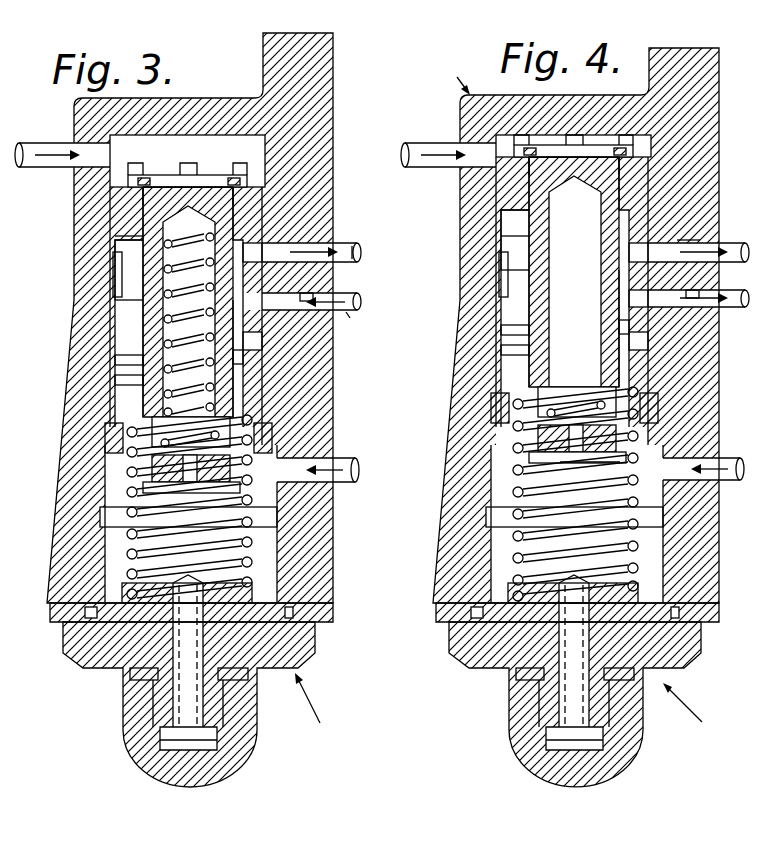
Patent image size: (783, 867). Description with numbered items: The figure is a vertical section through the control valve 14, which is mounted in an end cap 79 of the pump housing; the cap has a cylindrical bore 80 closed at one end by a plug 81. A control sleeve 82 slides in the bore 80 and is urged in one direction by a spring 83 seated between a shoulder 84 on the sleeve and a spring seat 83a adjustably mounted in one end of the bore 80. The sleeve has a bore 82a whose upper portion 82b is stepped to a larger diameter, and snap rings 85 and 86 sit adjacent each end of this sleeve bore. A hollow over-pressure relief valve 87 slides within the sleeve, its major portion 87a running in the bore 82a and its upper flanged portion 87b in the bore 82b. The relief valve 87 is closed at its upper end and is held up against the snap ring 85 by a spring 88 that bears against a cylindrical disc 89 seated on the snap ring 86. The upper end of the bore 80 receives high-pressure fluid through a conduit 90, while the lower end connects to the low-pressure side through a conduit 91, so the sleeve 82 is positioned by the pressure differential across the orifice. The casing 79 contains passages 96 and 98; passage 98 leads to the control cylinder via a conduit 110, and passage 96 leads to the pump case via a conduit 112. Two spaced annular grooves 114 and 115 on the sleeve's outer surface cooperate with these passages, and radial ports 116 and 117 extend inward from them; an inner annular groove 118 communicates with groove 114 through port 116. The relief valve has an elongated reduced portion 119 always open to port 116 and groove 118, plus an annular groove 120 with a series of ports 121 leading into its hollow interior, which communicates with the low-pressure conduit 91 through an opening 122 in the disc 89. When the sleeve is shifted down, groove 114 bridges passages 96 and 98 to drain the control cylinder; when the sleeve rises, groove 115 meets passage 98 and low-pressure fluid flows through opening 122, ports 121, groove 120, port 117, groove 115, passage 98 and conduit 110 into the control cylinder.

In FIG. 3, the control valve 14 is at (347, 743).
In FIG. 4, the control valve 14 is at (730, 746).
In FIG. 3, the end cap 79 is at (218, 104).
In FIG. 4, the end cap 79 is at (610, 102).
In FIG. 3, the cylindrical bore 80 is at (268, 158).
In FIG. 4, the cylindrical bore 80 is at (656, 148).
In FIG. 3, the plug 81 is at (293, 645).
In FIG. 4, the plug 81 is at (677, 655).
In FIG. 3, the control sleeve 82 is at (124, 205).
In FIG. 4, the control sleeve 82 is at (513, 198).
In FIG. 3, the sleeve bore 82a is at (157, 443).
In FIG. 4, the sleeve bore 82a is at (547, 383).
In FIG. 3, the upper portion of sleeve bore 82b is at (133, 238).
In FIG. 4, the upper portion of sleeve bore 82b is at (503, 233).
In FIG. 3, the spring 83 is at (128, 485).
In FIG. 4, the spring 83 is at (517, 470).
In FIG. 3, the spring seat 83a is at (240, 573).
In FIG. 4, the spring seat 83a is at (630, 572).
In FIG. 3, the shoulder 84 is at (123, 427).
In FIG. 4, the shoulder 84 is at (513, 402).
In FIG. 3, the snap ring 85 is at (143, 183).
In FIG. 4, the snap ring 85 is at (540, 150).
In FIG. 3, the snap ring 86 is at (318, 471).
In FIG. 4, the snap ring 86 is at (560, 462).
In FIG. 3, the over-pressure relief valve 87 is at (147, 313).
In FIG. 4, the over-pressure relief valve 87 is at (533, 292).
In FIG. 3, the major portion 87a is at (152, 407).
In FIG. 4, the major portion 87a is at (528, 378).
In FIG. 3, the upper flanged portion 87b is at (122, 203).
In FIG. 4, the upper flanged portion 87b is at (523, 168).
In FIG. 3, the spring 88 is at (138, 267).
In FIG. 4, the spring 88 is at (513, 220).
In FIG. 3, the cylindrical disc 89 is at (132, 468).
In FIG. 4, the cylindrical disc 89 is at (523, 432).
In FIG. 3, the conduit 90 is at (31, 148).
In FIG. 4, the conduit 90 is at (432, 148).
In FIG. 4, the conduit 91 is at (730, 457).
In FIG. 3, the passage 96 is at (277, 247).
In FIG. 4, the passage 96 is at (677, 240).
In FIG. 3, the passage 98 is at (313, 297).
In FIG. 4, the passage 98 is at (700, 292).
In FIG. 3, the conduit 110 is at (348, 317).
In FIG. 4, the conduit 110 is at (749, 297).
In FIG. 3, the conduit 112 is at (354, 251).
In FIG. 4, the conduit 112 is at (749, 250).
In FIG. 3, the annular groove 114 is at (277, 233).
In FIG. 4, the annular groove 114 is at (650, 220).
In FIG. 3, the annular groove 115 is at (265, 338).
In FIG. 4, the annular groove 115 is at (650, 308).
In FIG. 3, the port 116 is at (311, 301).
In FIG. 4, the port 116 is at (657, 240).
In FIG. 3, the port 117 is at (253, 358).
In FIG. 4, the port 117 is at (643, 330).
In FIG. 3, the annular groove 118 is at (140, 283).
In FIG. 4, the annular groove 118 is at (538, 272).
In FIG. 3, the elongated reduced portion 119 is at (150, 308).
In FIG. 4, the elongated reduced portion 119 is at (537, 250).
In FIG. 3, the annular groove 120 is at (157, 362).
In FIG. 4, the annular groove 120 is at (540, 343).
In FIG. 3, the ports 121 is at (160, 380).
In FIG. 4, the ports 121 is at (540, 355).
In FIG. 3, the opening 122 is at (187, 473).
In FIG. 4, the opening 122 is at (575, 430).